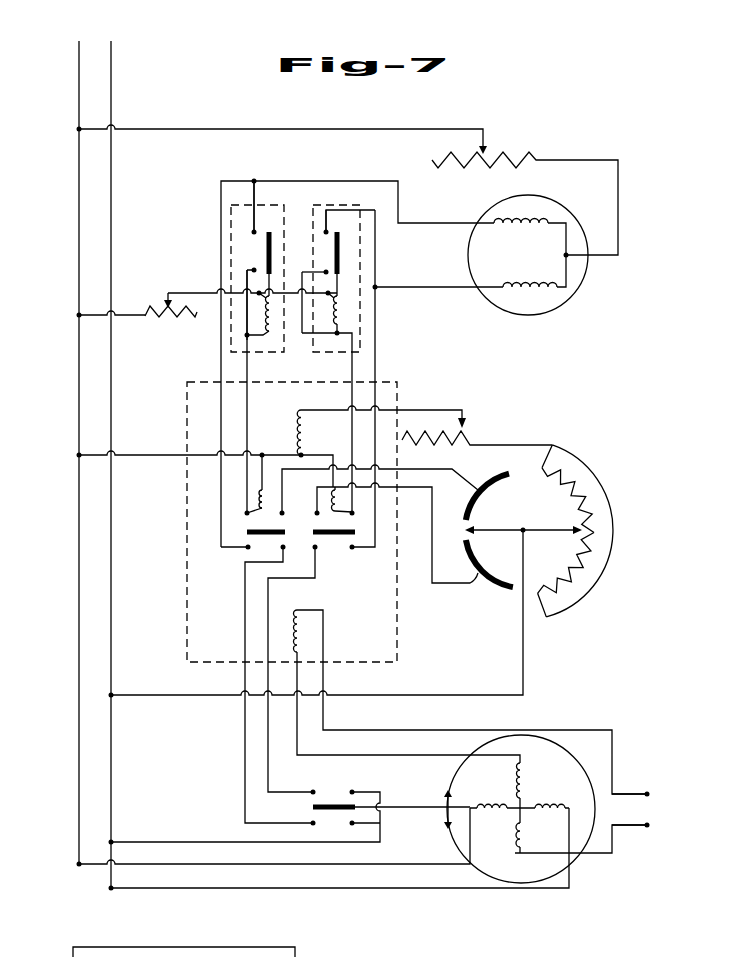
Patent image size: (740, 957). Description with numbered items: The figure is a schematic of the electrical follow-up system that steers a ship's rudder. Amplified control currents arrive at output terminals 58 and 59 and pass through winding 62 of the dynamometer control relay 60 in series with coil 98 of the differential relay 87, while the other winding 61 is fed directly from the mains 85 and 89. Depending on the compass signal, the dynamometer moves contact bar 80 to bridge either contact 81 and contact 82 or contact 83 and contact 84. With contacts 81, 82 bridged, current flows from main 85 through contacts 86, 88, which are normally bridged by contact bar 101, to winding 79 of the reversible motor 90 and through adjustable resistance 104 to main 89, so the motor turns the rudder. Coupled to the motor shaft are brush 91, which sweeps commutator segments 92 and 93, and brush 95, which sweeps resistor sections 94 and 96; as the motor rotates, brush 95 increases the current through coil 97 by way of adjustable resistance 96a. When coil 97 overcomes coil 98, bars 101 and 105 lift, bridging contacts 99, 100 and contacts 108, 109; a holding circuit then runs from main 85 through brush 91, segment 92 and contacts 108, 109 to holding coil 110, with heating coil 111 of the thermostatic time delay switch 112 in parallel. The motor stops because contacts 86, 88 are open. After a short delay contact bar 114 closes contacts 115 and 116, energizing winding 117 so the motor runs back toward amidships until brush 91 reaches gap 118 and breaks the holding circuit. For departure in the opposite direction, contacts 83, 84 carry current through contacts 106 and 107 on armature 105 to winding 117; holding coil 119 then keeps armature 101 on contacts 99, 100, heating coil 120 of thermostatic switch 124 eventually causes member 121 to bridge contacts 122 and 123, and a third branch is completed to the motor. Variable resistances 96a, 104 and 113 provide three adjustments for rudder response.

The output terminal 58 is at (665, 785).
The output terminal 59 is at (648, 826).
The dynamometer control relay 60 is at (497, 822).
The winding 61 is at (545, 804).
The winding 62 is at (523, 838).
The winding 79 is at (505, 232).
The contact bar 80 is at (333, 811).
The contact 81 is at (313, 825).
The contact 82 is at (354, 824).
The contact 83 is at (313, 791).
The contact 84 is at (352, 791).
The main 85 is at (113, 762).
The contact 86 is at (284, 549).
The differential relay 87 is at (187, 598).
The contact 88 is at (246, 549).
The main 89 is at (79, 763).
The reversible motor 90 is at (580, 300).
The brush 91 is at (500, 535).
The commutator segment 92 is at (500, 590).
The commutator segment 93 is at (498, 482).
The resistor section 94 is at (583, 553).
The brush 95 is at (550, 535).
The resistor section 96 is at (583, 500).
The adjustable resistance 96a is at (475, 432).
The coil 97 is at (295, 420).
The coil 98 is at (300, 632).
The contact 99 is at (247, 510).
The contact 100 is at (282, 515).
The contact bar 101 is at (262, 532).
The adjustable resistance 104 is at (460, 170).
The contact bar 105 is at (357, 530).
The contact 106 is at (316, 549).
The contact 107 is at (353, 549).
The contact 108 is at (317, 515).
The contact 109 is at (355, 512).
The holding coil 110 is at (333, 500).
The heating coil 111 is at (341, 311).
The thermostatic time delay switch 112 is at (362, 345).
The variable resistance 113 is at (163, 322).
The contact bar 114 is at (340, 253).
The contact 115 is at (326, 272).
The contact 116 is at (326, 232).
The winding 117 is at (520, 283).
The gap 118 is at (466, 534).
The holding coil 119 is at (265, 492).
The heating coil 120 is at (262, 312).
The member 121 is at (265, 249).
The contact 122 is at (254, 270).
The contact 123 is at (254, 232).
The thermostatic switch 124 is at (272, 352).